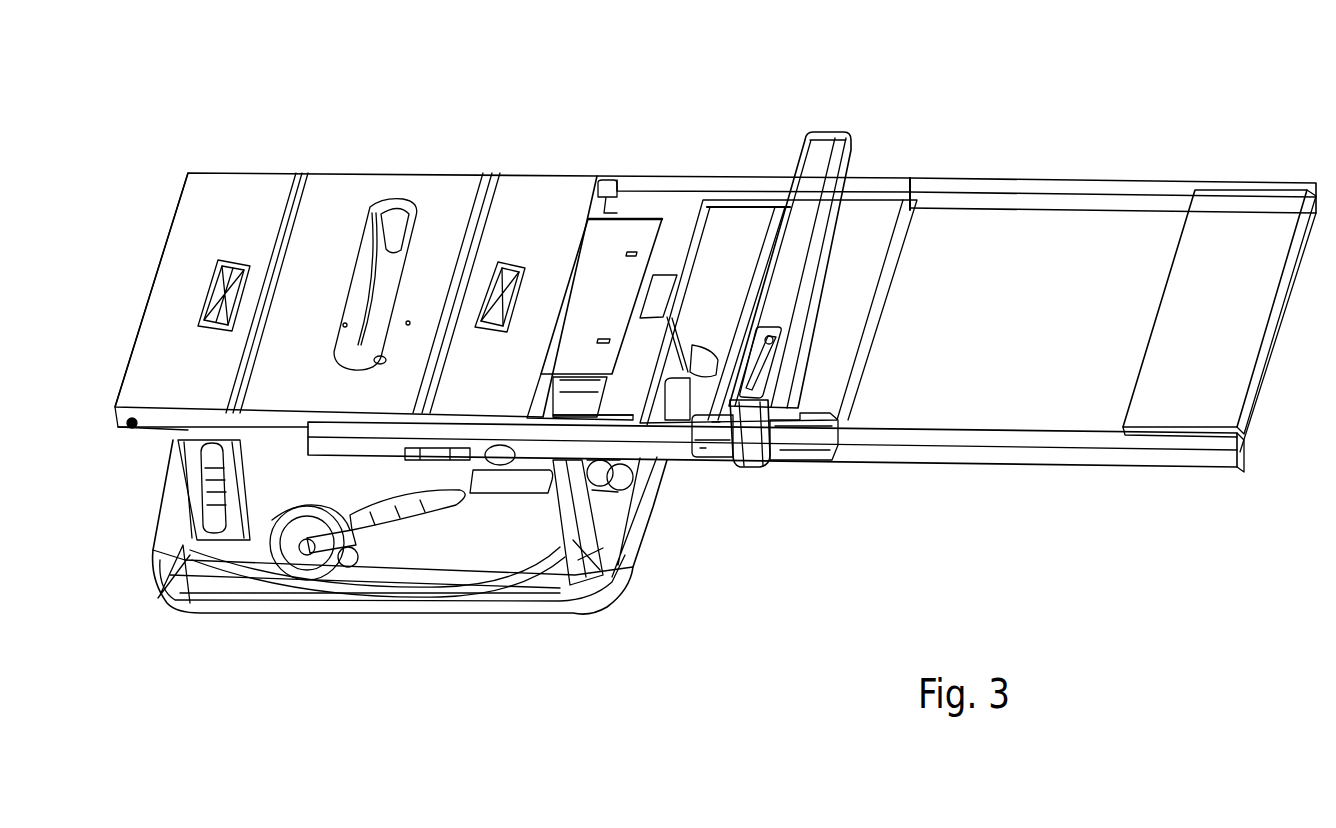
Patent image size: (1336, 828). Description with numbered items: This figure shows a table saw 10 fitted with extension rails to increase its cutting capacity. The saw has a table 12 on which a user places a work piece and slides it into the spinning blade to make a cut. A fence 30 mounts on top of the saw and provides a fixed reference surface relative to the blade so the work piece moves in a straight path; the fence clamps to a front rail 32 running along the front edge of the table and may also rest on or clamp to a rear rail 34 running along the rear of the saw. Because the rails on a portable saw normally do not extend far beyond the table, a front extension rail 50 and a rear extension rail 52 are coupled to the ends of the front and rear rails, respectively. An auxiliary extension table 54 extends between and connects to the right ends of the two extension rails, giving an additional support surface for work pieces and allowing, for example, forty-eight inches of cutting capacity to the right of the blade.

The table saw 10 is at (166, 145).
The table 12 is at (546, 200).
The fence 30 is at (820, 157).
The front rail 32 is at (671, 451).
The rear rail 34 is at (755, 178).
The front extension rail 50 is at (1012, 460).
The rear extension rail 52 is at (1013, 185).
The auxiliary extension table 54 is at (1250, 218).